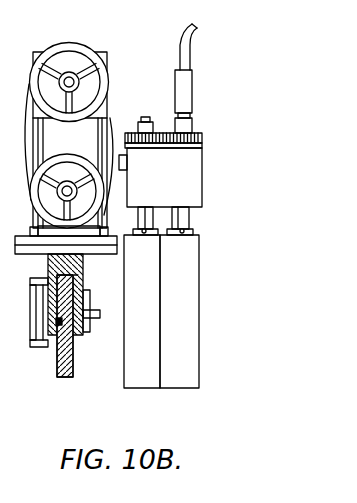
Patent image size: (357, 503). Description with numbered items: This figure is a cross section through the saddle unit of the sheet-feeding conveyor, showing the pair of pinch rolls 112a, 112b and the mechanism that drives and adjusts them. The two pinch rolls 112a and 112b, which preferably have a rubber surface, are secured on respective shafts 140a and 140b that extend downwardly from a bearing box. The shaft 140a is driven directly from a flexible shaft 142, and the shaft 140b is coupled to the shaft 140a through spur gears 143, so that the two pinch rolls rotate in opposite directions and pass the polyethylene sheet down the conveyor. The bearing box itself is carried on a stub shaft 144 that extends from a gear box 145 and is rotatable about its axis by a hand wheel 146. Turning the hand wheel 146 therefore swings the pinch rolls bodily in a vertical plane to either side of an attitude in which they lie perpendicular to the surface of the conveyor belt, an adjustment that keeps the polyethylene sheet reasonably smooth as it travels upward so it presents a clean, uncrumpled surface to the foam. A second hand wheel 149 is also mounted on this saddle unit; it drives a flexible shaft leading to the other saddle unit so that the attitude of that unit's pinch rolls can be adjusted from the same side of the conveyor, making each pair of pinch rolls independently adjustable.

The pinch roll 112a is at (183, 383).
The pinch roll 112b is at (131, 367).
The shaft 140a is at (185, 219).
The shaft 140b is at (146, 212).
The flexible shaft 142 is at (187, 52).
The spur gears 143 is at (163, 133).
The stub shaft 144 is at (119, 148).
The gear box 145 is at (26, 145).
The hand wheel 146 is at (40, 209).
The hand wheel 149 is at (106, 74).